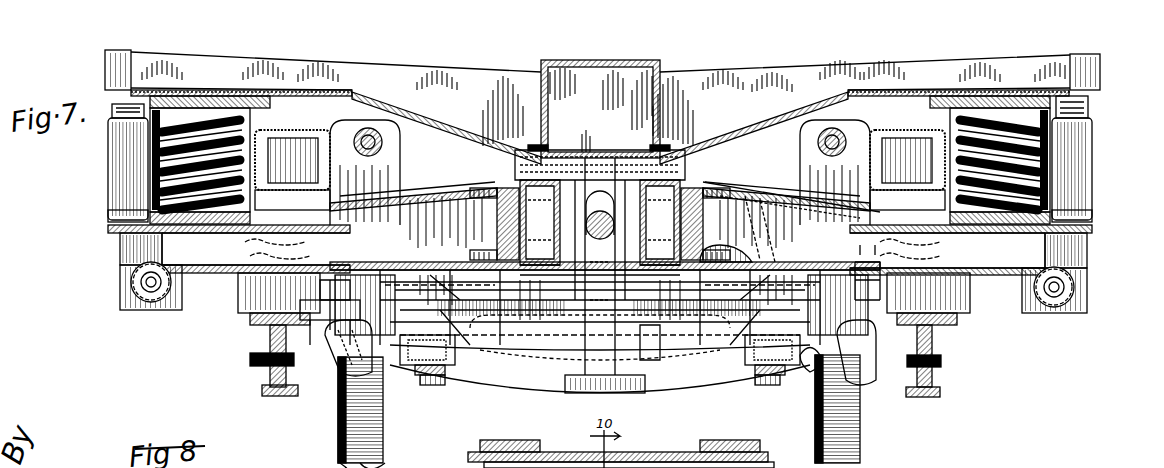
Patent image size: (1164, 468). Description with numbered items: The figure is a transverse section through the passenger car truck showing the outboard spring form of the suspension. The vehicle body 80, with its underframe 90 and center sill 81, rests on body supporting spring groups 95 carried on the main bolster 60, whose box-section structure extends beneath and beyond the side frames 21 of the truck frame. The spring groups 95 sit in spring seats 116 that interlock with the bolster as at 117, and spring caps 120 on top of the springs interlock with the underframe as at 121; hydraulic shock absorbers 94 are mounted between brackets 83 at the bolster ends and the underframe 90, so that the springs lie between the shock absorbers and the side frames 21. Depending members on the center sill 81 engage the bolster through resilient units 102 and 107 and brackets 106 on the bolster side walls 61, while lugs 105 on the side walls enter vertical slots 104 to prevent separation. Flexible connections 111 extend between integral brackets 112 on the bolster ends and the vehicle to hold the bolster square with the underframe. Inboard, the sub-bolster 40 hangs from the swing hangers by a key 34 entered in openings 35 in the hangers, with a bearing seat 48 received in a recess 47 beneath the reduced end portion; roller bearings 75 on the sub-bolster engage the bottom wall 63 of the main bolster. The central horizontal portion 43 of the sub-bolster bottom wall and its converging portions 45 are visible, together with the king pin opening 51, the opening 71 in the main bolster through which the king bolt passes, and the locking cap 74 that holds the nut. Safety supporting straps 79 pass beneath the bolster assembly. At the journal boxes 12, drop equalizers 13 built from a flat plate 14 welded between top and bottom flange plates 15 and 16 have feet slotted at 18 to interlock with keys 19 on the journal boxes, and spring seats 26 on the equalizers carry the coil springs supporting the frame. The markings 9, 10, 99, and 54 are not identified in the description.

The vehicle body 80 is at (106, 60).
The center sill 81 is at (660, 96).
The section line 9 is at (610, 106).
The underframe 90 is at (730, 128).
The spring cap interlock 121 is at (203, 92).
The body supporting springs 95 is at (240, 140).
The side frames 21 is at (306, 130).
The journal boxes 12 is at (912, 130).
The openings 35 is at (384, 142).
The snubber cylinder 99 is at (110, 164).
The spring caps 120 is at (130, 118).
The shock absorbers 94 is at (600, 229).
The spring seats 116 is at (148, 200).
The brackets 83 is at (120, 240).
The spring seat interlock 117 is at (602, 254).
The flexible connections 111 is at (158, 310).
The integral brackets 112 is at (130, 310).
The brackets 106 is at (497, 212).
The resilient units 107 is at (500, 188).
The vertical slots 104 is at (585, 204).
The lugs 105 is at (614, 222).
The resilient units 102 is at (600, 220).
The opening 71 is at (600, 260).
The main bolster 60 is at (770, 190).
The side walls 61 is at (760, 229).
The bottom wall 63 is at (800, 236).
The roller bearings 75 is at (870, 262).
The spring plank 10 is at (560, 346).
The king pin opening 51 is at (575, 358).
The locking cap 74 is at (575, 393).
The brake lever bracket 54 is at (455, 365).
The converging portion 45 is at (462, 375).
The sub-bolster 40 is at (510, 386).
The central horizontal portion 43 is at (672, 385).
The safety supporting straps 79 is at (432, 385).
The recess 47 is at (812, 385).
The key 34 is at (340, 400).
The bearing seat 48 is at (330, 380).
The slot 18 is at (318, 335).
The spring seats 26 is at (245, 308).
The top flange plate 15 is at (262, 336).
The flat plate 14 is at (270, 376).
The bottom flange plate 16 is at (262, 392).
The drop equalizers 13 is at (940, 394).
The keys 19 is at (406, 398).